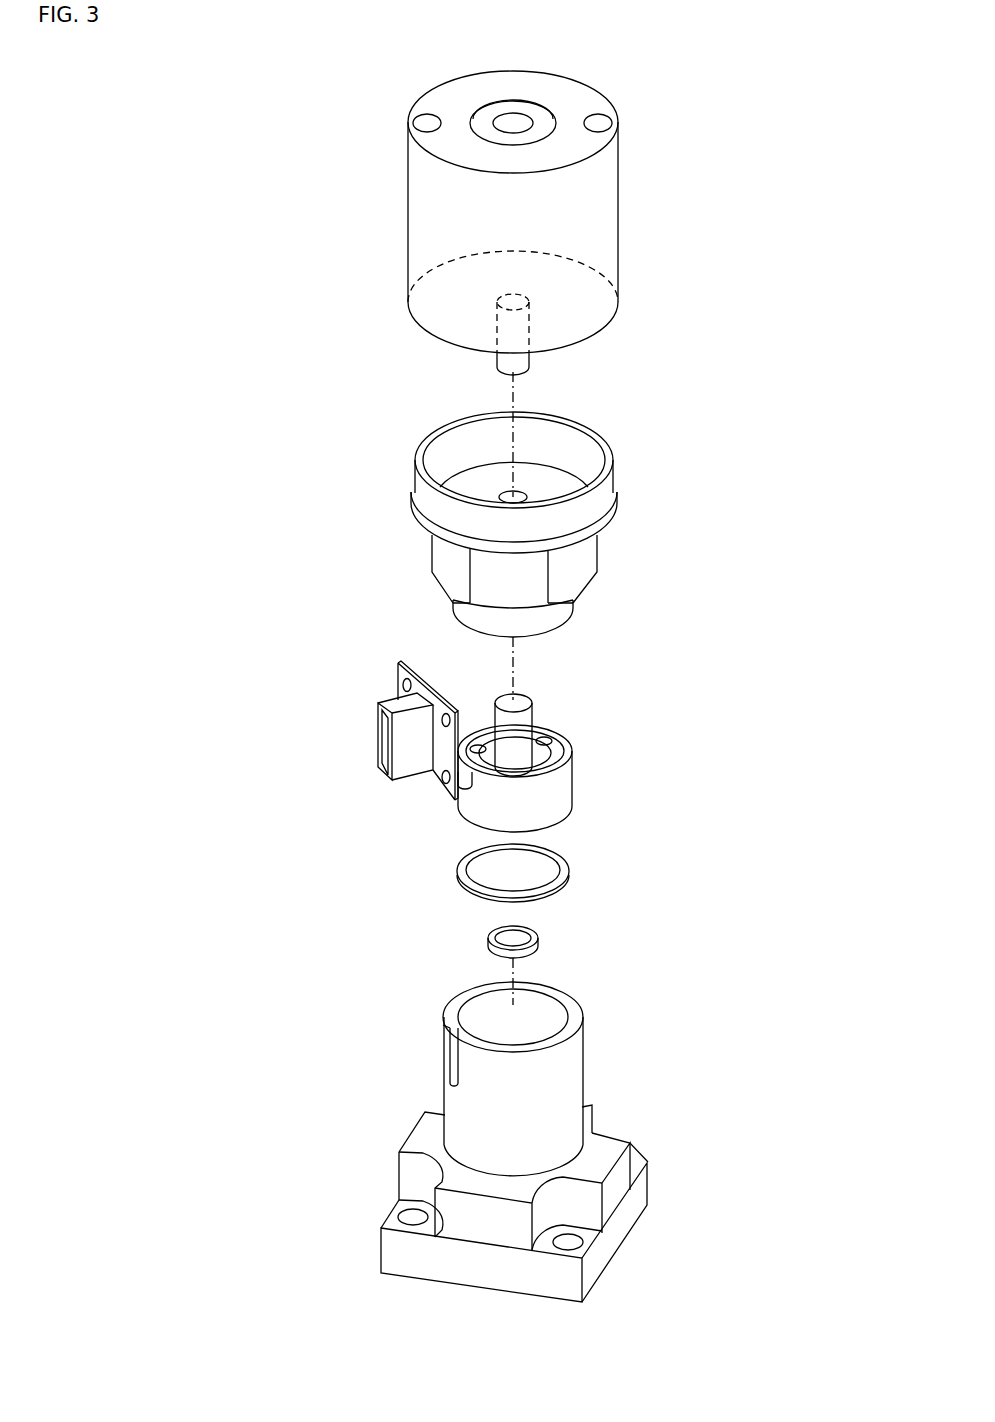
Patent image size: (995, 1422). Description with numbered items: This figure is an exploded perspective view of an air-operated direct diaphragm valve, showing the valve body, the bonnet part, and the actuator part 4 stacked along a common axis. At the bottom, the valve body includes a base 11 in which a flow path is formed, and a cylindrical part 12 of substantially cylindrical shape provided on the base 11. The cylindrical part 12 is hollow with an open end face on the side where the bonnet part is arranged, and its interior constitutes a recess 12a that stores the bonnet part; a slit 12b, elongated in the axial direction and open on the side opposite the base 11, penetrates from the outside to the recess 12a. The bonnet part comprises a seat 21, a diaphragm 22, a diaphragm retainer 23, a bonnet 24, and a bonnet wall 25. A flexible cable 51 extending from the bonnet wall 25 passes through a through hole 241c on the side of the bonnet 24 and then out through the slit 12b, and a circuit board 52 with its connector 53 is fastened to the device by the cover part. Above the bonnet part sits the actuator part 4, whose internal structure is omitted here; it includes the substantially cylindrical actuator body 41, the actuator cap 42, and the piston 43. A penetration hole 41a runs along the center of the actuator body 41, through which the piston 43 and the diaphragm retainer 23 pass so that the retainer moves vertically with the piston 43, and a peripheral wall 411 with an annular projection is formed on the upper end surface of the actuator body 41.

The actuator part 4 is at (589, 223).
The actuator cap 42 is at (618, 212).
The piston 43 is at (528, 362).
The actuator body 41 is at (527, 504).
The penetration hole 41a is at (510, 490).
The peripheral wall 411 is at (415, 486).
The flexible cable 51 is at (343, 723).
The circuit board 52 is at (400, 663).
The connector 53 is at (377, 735).
The diaphragm retainer 23 is at (550, 697).
The bonnet 24 is at (575, 745).
The bonnet wall 25 is at (548, 745).
The through hole 241c is at (480, 784).
The diaphragm 22 is at (570, 873).
The seat 21 is at (488, 943).
The cylindrical part 12 is at (513, 1071).
The recess 12a is at (565, 1025).
The slit 12b is at (445, 1028).
The base 11 is at (623, 1241).